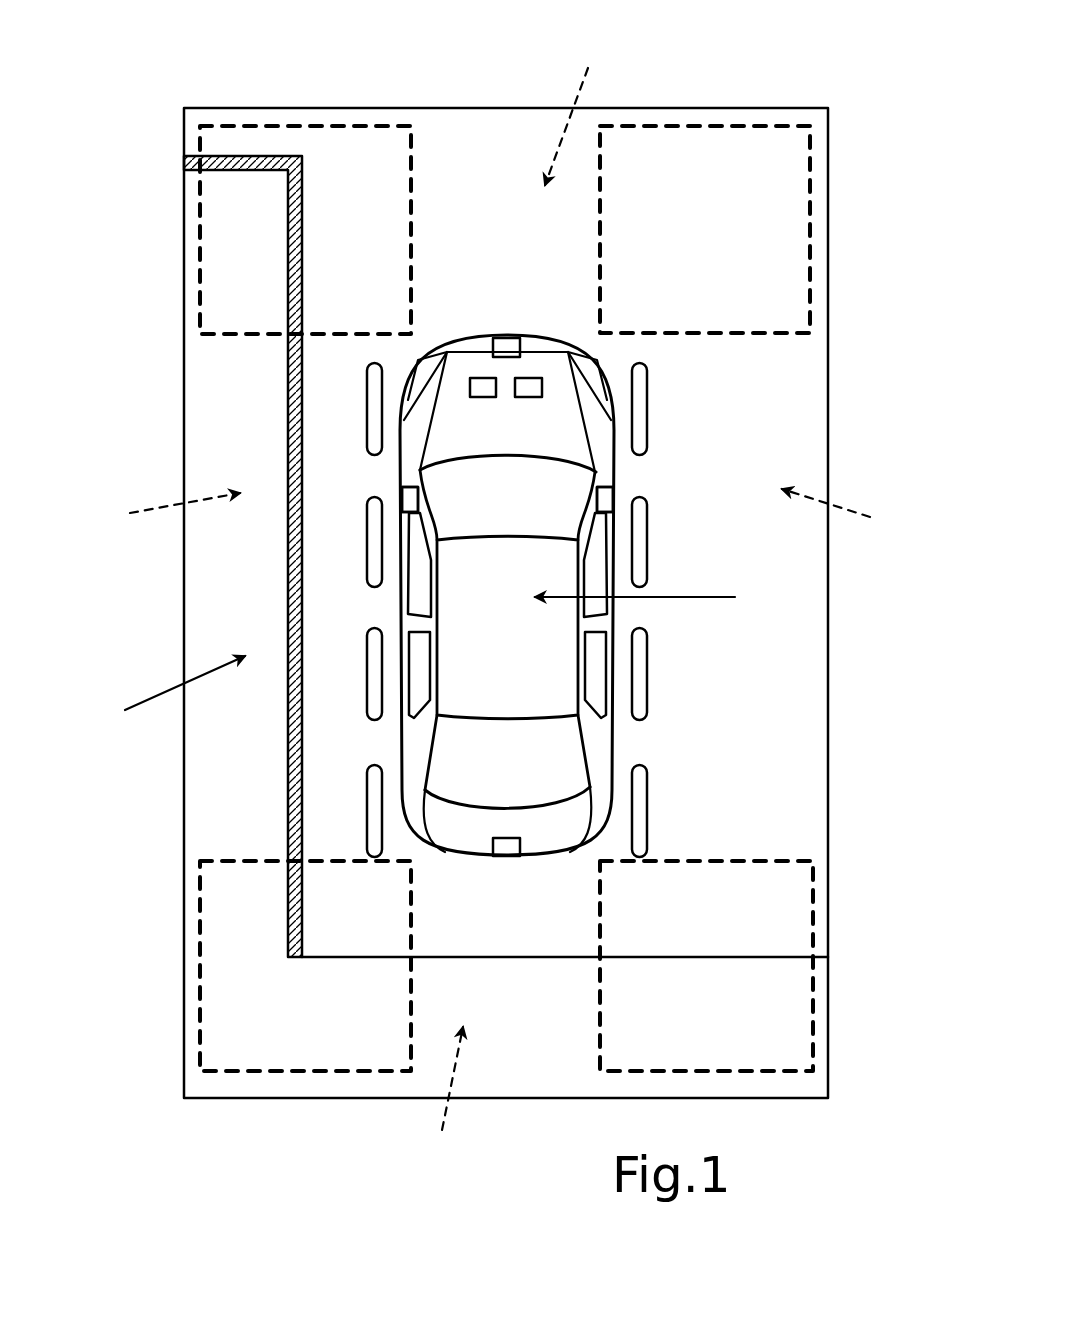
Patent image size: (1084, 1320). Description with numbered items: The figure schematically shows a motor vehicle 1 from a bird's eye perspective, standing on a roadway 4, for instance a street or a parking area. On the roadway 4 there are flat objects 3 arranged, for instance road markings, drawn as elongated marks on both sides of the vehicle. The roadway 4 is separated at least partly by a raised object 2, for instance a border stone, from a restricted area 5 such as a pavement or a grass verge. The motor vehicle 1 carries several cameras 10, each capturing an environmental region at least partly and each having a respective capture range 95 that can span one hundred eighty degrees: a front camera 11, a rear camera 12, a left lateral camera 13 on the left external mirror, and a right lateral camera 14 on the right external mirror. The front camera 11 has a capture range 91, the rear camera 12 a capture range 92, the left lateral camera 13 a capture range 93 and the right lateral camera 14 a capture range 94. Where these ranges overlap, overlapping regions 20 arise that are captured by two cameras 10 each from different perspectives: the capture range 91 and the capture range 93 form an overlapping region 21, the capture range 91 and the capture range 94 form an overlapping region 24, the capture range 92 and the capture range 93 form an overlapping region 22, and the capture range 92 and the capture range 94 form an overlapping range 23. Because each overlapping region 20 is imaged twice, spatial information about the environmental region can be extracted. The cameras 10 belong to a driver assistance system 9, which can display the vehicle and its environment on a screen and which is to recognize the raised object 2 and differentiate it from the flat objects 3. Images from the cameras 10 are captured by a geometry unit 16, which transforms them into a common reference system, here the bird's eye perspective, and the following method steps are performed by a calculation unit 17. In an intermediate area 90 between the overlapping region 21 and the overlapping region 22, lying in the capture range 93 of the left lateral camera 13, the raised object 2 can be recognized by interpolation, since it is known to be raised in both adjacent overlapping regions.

The motor vehicle 1 is at (618, 613).
The raised object 2 is at (290, 577).
The flat objects 3 is at (369, 407).
The roadway 4 is at (456, 175).
The restricted area 5 is at (195, 393).
The driver assistance system 9 is at (646, 597).
The cameras 10 is at (472, 600).
The front camera 11 is at (505, 338).
The rear camera 12 is at (505, 857).
The left lateral camera 13 is at (400, 500).
The right lateral camera 14 is at (600, 498).
The geometry unit 16 is at (483, 397).
The calculation unit 17 is at (530, 397).
The overlapping regions 20 is at (507, 598).
The overlapping region 21 is at (237, 265).
The overlapping region 22 is at (237, 1016).
The overlapping range 23 is at (785, 1016).
The overlapping region 24 is at (775, 276).
The intermediate area 90 is at (165, 695).
The capture range 91 is at (589, 105).
The capture range 92 is at (437, 1097).
The capture range 93 is at (141, 512).
The capture range 94 is at (871, 511).
The capture range 95 is at (501, 596).